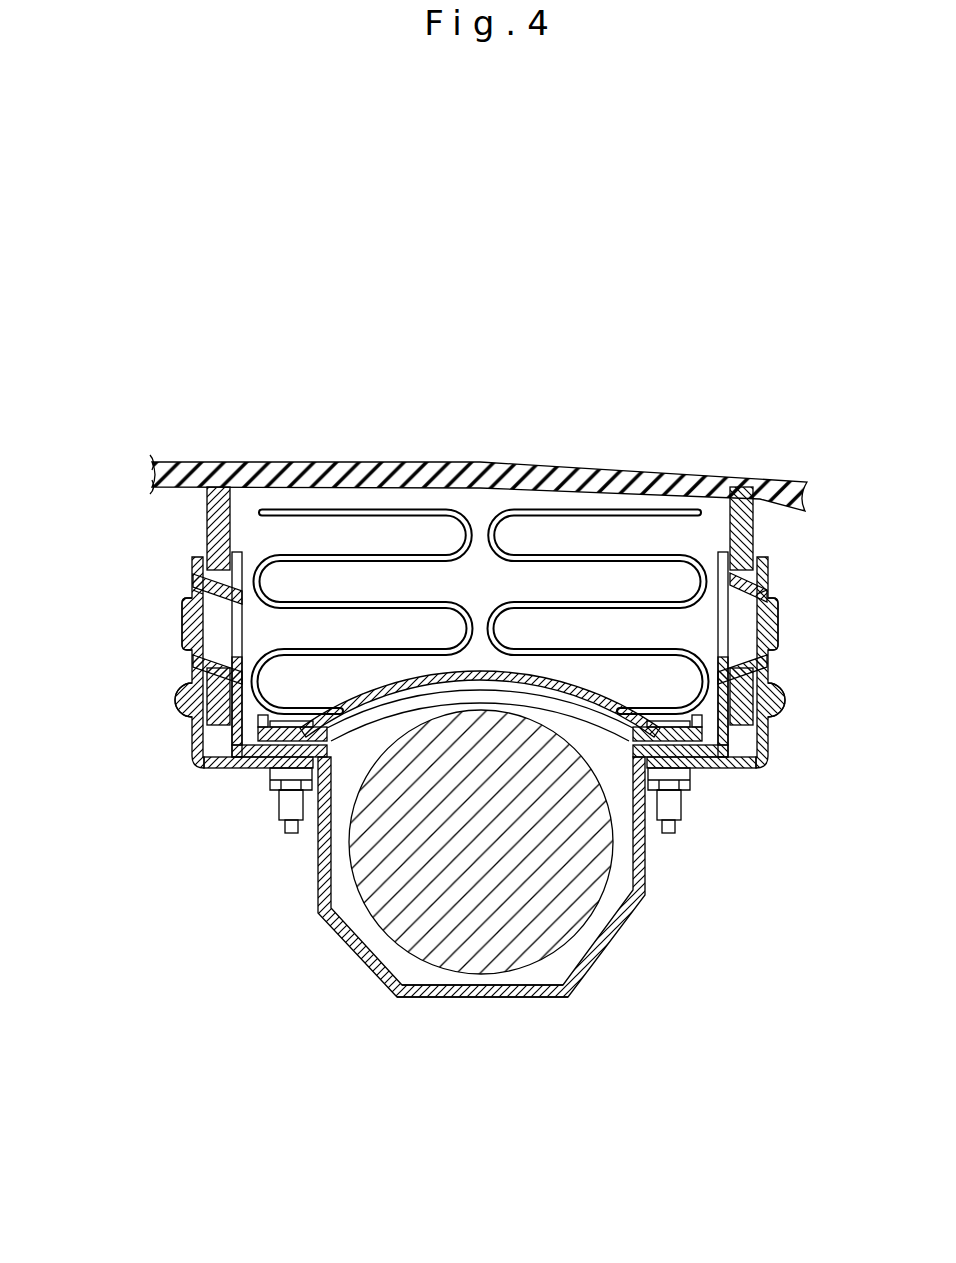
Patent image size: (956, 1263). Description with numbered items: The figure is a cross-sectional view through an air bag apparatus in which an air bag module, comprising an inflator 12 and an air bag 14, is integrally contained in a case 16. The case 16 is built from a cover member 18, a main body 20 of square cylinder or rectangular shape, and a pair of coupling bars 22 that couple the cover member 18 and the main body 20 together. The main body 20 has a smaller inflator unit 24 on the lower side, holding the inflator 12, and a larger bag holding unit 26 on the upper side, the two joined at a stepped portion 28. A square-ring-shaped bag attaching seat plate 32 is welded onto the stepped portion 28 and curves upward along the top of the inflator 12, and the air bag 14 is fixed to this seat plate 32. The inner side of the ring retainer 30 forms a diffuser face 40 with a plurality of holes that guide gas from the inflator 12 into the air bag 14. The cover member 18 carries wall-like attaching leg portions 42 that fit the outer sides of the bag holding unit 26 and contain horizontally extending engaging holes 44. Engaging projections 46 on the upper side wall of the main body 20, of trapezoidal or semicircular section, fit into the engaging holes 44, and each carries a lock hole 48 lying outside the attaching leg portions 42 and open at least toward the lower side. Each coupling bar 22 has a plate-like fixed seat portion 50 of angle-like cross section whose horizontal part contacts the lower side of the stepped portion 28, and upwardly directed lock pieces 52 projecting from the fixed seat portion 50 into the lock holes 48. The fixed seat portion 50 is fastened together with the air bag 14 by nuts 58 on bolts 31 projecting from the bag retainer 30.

The inflator 12 is at (485, 923).
The air bag 14 is at (610, 513).
The case 16 is at (472, 888).
The cover member 18 is at (387, 473).
The main body 20 is at (645, 890).
The coupling bars 22 is at (785, 682).
The inflator unit 24 is at (318, 875).
The bag holding unit 26 is at (240, 552).
The stepped portion 28 is at (720, 773).
The ring retainer 30 is at (700, 723).
The bolts 31 is at (685, 808).
The bag attaching seat plate 32 is at (267, 770).
The diffuser face 40 is at (479, 672).
The attaching leg portions 42 is at (215, 530).
The engaging holes 44 is at (193, 584).
The engaging projections 46 is at (181, 627).
The lock holes 48 is at (772, 583).
The fixed seat portion 50 is at (223, 765).
The lock pieces 52 is at (772, 597).
The nuts 58 is at (670, 837).